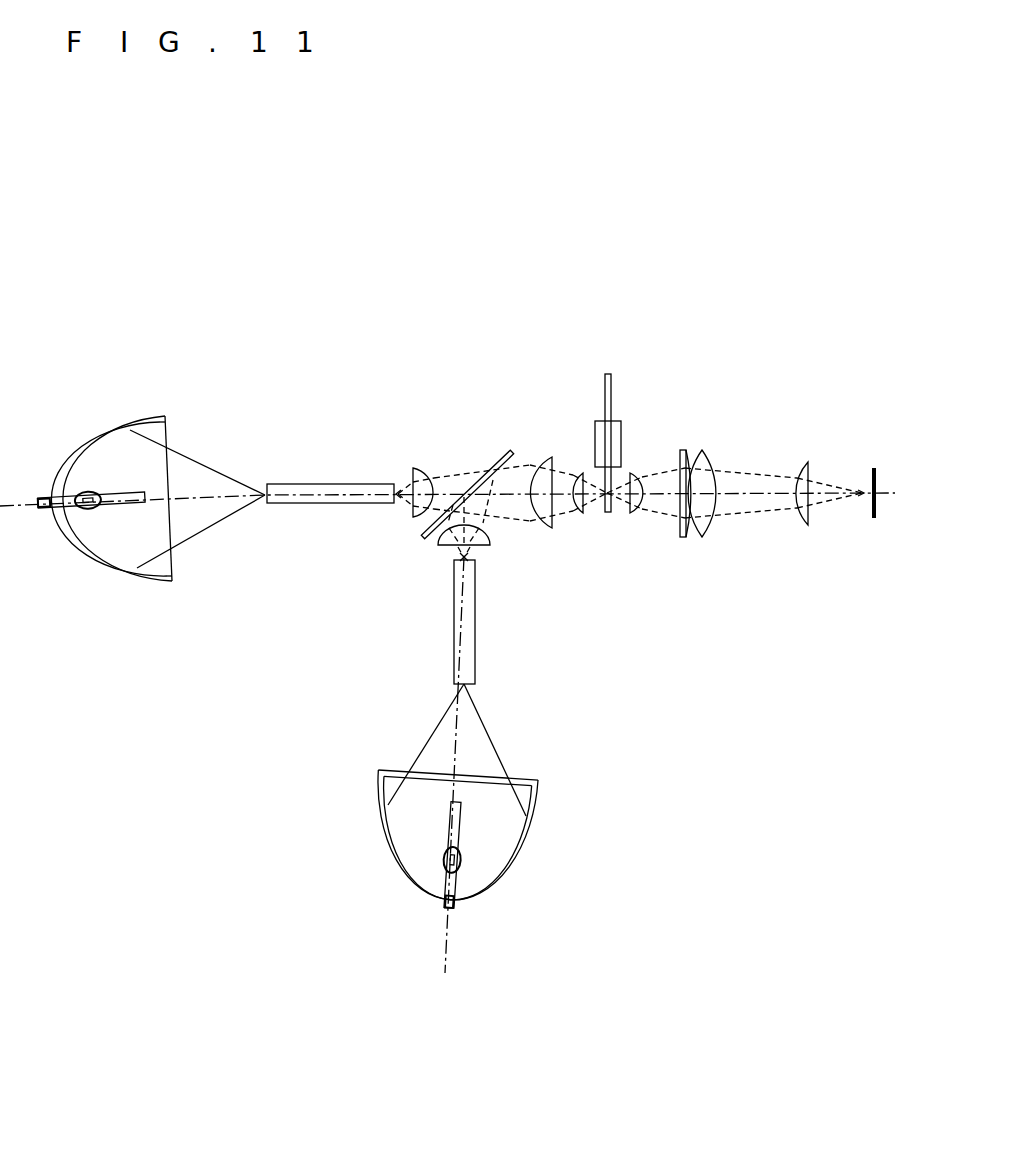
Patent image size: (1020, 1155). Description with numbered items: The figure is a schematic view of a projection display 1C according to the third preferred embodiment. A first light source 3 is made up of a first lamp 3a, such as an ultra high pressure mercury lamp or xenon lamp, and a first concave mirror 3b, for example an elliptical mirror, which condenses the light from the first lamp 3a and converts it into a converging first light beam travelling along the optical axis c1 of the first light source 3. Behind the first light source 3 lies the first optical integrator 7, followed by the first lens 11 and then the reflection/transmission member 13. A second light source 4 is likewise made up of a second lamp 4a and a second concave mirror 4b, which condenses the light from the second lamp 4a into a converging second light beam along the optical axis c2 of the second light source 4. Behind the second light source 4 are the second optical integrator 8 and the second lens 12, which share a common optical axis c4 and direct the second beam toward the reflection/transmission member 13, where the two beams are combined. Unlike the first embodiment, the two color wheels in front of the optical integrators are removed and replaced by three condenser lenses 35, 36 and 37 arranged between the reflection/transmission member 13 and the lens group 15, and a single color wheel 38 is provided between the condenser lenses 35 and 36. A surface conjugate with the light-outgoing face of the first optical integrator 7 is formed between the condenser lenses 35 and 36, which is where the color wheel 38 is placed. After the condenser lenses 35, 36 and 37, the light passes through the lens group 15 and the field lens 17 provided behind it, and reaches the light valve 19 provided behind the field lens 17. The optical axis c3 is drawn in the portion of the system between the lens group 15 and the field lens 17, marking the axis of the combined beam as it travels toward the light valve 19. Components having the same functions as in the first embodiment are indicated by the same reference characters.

The projection display 1C is at (284, 246).
The first light source 3 is at (150, 519).
The first lamp 3a is at (92, 537).
The first concave mirror 3b is at (97, 437).
The optical axis of the first light source c1 is at (188, 497).
The first optical integrator 7 is at (330, 505).
The first lens 11 is at (418, 463).
The reflection/transmission member 13 is at (495, 453).
The second lens 12 is at (485, 546).
The second optical integrator 8 is at (454, 600).
The common optical axis c4 is at (470, 618).
The optical axis of the second light source c2 is at (460, 750).
The second light source 4 is at (487, 801).
The second lamp 4a is at (444, 858).
The second concave mirror 4b is at (538, 797).
The condenser lens 35 is at (542, 458).
The condenser lens 36 is at (583, 515).
The condenser lens 37 is at (633, 515).
The color wheel 38 is at (618, 410).
The lens group 15 is at (718, 541).
The optical axis c3 is at (763, 490).
The field lens 17 is at (808, 462).
The light valve 19 is at (873, 468).